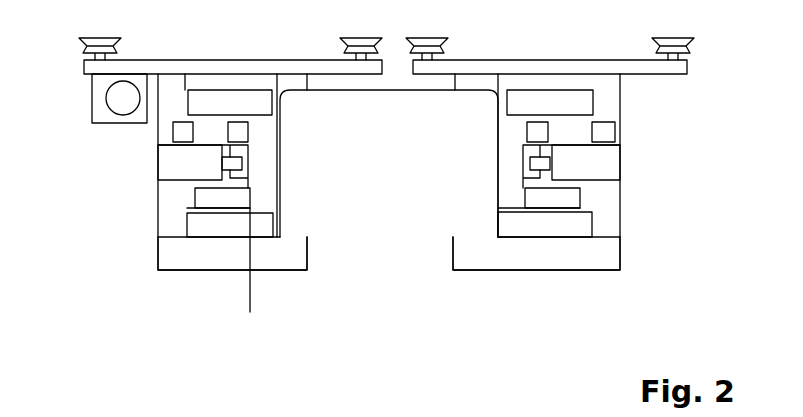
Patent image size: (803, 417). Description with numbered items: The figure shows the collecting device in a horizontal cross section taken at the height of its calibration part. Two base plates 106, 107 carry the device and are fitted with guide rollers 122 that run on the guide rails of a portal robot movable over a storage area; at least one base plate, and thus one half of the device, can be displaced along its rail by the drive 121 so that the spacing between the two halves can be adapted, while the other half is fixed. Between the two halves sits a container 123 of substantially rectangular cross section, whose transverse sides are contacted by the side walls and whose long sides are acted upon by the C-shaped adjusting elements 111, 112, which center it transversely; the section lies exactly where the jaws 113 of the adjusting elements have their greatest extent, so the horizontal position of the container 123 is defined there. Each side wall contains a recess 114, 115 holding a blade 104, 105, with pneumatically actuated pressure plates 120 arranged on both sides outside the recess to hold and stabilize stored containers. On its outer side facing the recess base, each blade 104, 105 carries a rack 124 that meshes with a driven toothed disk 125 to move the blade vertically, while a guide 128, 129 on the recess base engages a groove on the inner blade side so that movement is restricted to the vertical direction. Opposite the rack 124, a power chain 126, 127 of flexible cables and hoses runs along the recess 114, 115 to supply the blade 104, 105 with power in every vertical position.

The blade 104 is at (507, 180).
The blade 105 is at (271, 203).
The base plate 106 is at (558, 64).
The base plate 107 is at (247, 64).
The adjusting element 111 is at (502, 258).
The adjusting element 112 is at (199, 250).
The jaws 113 is at (302, 255).
The recess 114 is at (523, 143).
The recess 115 is at (250, 146).
The pressure plates 120 is at (200, 97).
The drive 121 is at (117, 103).
The guide rollers 122 is at (96, 41).
The container 123 is at (371, 220).
The rack 124 is at (568, 307).
The toothed disk 125 is at (208, 198).
The power chain 126 is at (538, 132).
The power chain 127 is at (186, 134).
The guide 128 is at (595, 166).
The guide 129 is at (173, 164).